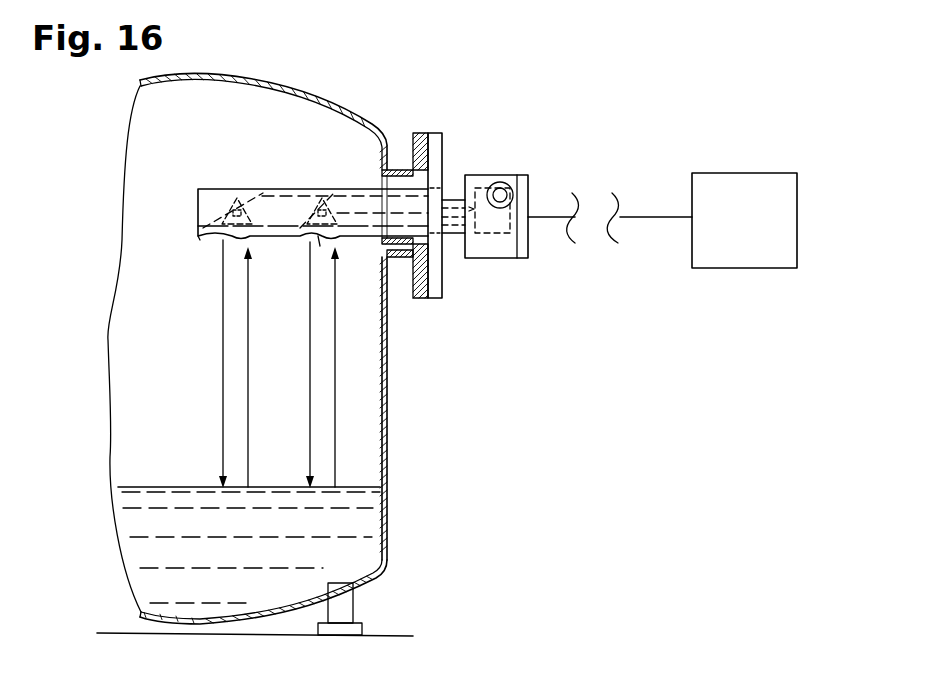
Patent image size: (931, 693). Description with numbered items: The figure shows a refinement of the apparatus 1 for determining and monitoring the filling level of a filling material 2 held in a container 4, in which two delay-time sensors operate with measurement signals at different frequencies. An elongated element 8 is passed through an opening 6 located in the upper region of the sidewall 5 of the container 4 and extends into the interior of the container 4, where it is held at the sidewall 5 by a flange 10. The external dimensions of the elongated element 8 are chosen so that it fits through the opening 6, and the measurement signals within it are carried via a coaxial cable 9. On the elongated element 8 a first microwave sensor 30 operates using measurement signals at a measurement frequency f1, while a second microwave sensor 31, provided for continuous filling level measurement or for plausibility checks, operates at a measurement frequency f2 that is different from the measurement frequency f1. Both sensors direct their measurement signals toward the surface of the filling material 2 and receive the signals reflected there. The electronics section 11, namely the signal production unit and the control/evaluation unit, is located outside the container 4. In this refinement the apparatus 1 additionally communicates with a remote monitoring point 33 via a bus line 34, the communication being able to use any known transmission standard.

The apparatus 1 is at (402, 133).
The filling material 2 is at (358, 528).
The container 4 is at (160, 402).
The sidewall 5 is at (386, 404).
The opening 6 is at (395, 247).
The elongated element 8 is at (250, 192).
The coaxial cable 9 is at (300, 192).
The flange 10 is at (438, 150).
The electronics section 11 is at (500, 242).
The first microwave sensor 30 is at (200, 240).
The second microwave sensor 31 is at (320, 247).
The remote monitoring point 33 is at (750, 237).
The bus line 34 is at (652, 217).
The measurement frequency f1 is at (251, 364).
The measurement frequency f2 is at (338, 365).